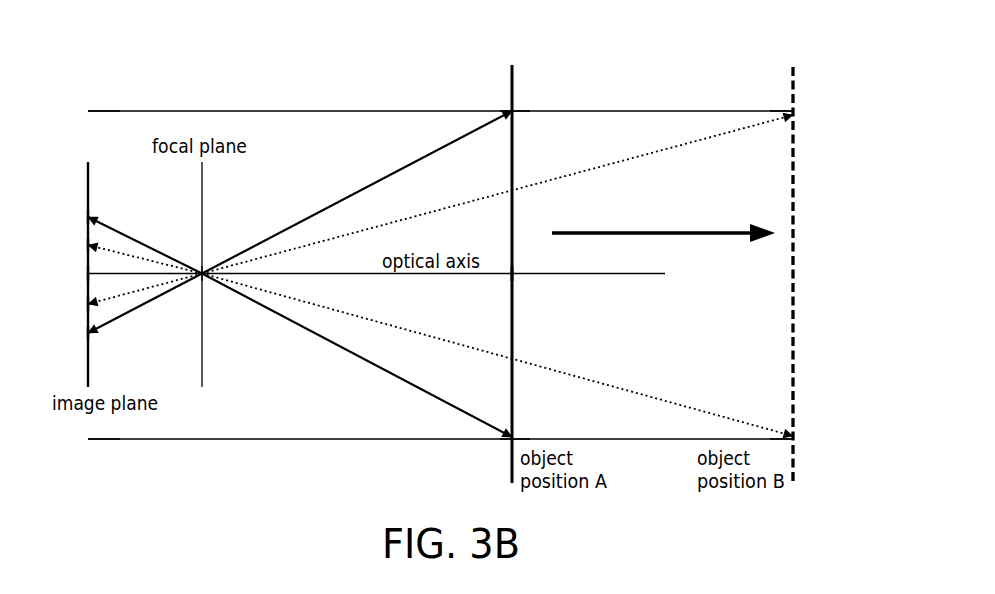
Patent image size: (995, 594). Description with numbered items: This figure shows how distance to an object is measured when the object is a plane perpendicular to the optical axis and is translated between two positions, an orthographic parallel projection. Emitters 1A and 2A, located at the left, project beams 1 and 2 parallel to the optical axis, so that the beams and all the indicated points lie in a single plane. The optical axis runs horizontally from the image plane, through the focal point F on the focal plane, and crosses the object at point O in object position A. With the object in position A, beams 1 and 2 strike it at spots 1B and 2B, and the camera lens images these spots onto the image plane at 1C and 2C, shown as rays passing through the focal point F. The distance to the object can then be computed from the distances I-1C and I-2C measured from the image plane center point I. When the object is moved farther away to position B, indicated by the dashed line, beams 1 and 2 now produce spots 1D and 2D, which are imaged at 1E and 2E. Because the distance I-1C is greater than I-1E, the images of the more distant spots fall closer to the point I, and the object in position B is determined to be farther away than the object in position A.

The beam 1 is at (275, 110).
The beam 2 is at (275, 440).
The emitter 1A is at (88, 111).
The emitter 2A is at (88, 441).
The spot 1B is at (521, 99).
The spot 2B is at (521, 428).
The spot 1D is at (798, 113).
The spot 2D is at (798, 441).
The image of spot 1C is at (72, 336).
The image of spot 2C is at (72, 216).
The image of spot 1E is at (72, 306).
The image of spot 2E is at (72, 246).
The image plane center point I is at (82, 275).
The focal point F is at (210, 265).
The optical axis point at object position A O is at (523, 284).